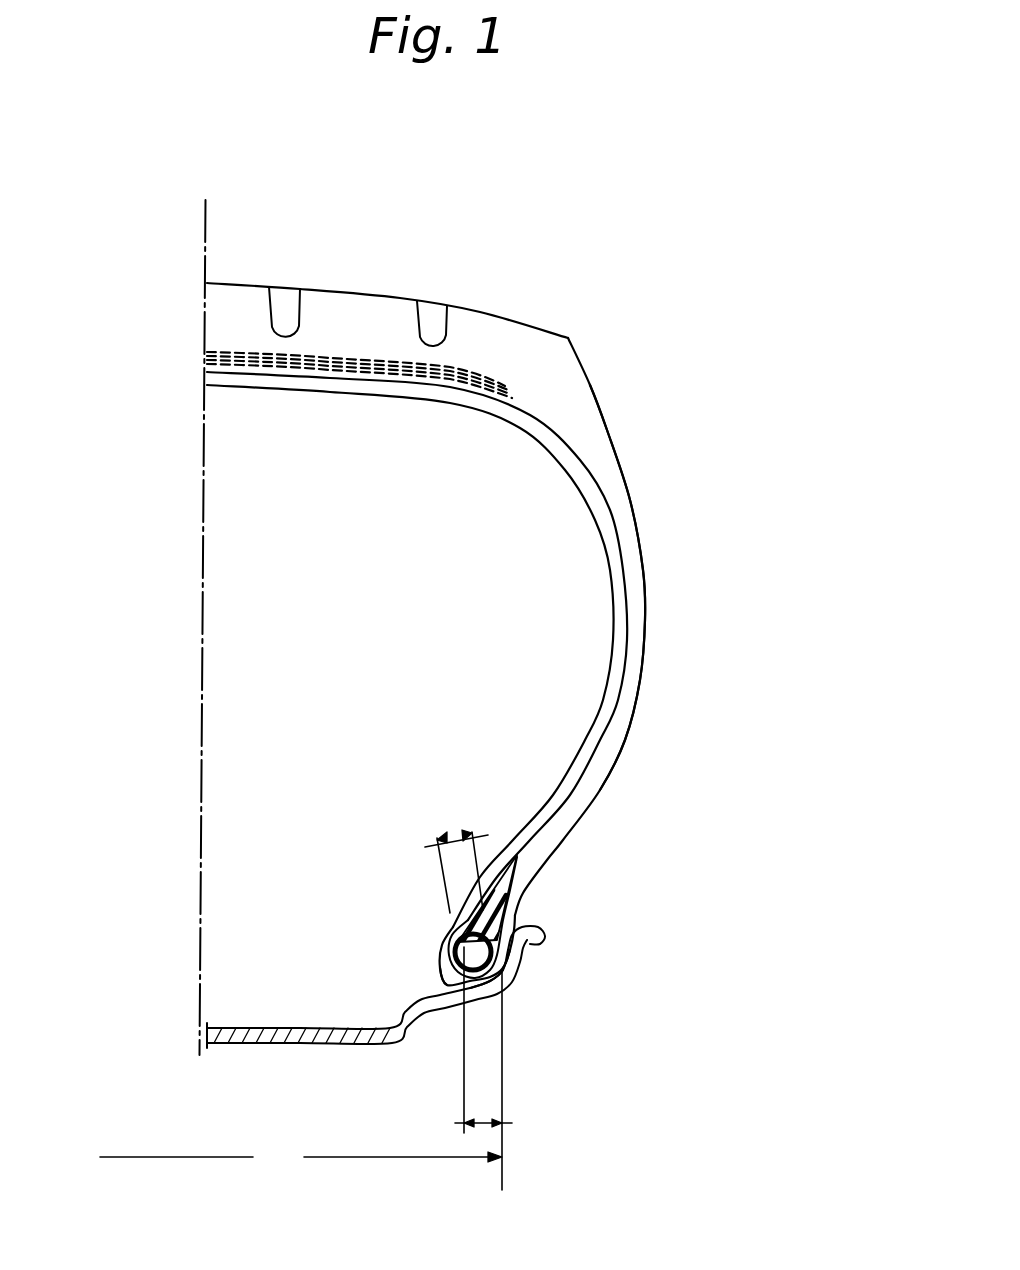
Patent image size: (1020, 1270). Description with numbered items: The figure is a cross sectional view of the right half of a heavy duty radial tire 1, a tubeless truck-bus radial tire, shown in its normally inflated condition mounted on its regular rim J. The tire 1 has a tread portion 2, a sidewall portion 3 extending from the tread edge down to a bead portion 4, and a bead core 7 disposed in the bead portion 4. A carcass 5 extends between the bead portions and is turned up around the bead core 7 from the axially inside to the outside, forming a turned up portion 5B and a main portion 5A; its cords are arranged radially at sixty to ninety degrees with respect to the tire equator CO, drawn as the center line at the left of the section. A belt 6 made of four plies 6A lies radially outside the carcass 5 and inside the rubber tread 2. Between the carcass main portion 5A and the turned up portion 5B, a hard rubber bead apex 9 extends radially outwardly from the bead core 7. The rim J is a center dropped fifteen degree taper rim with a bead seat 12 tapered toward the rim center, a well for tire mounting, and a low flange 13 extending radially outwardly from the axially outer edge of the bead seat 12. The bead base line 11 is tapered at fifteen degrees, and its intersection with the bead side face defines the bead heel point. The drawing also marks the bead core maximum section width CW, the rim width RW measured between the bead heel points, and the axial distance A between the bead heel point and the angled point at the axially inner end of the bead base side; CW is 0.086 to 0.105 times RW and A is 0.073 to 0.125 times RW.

The heavy duty radial tire 1 is at (700, 349).
The tread portion 2 is at (393, 283).
The sidewall portion 3 is at (651, 501).
The bead portion 4 is at (597, 889).
The carcass 5 is at (776, 665).
The carcass main portion 5A is at (623, 664).
The carcass turned up portion 5B is at (513, 893).
The belt 6 is at (354, 163).
The belt ply 6A is at (357, 357).
The bead core 7 is at (466, 953).
The bead apex 9 is at (490, 942).
The bead base line 11 is at (487, 990).
The bead seat 12 is at (443, 973).
The flange 13 is at (513, 965).
The rim J is at (330, 1044).
The tire equator CO is at (205, 217).
The maximum section width of bead core CW is at (450, 836).
The axial distance A is at (478, 1122).
The rim width RW is at (301, 1163).